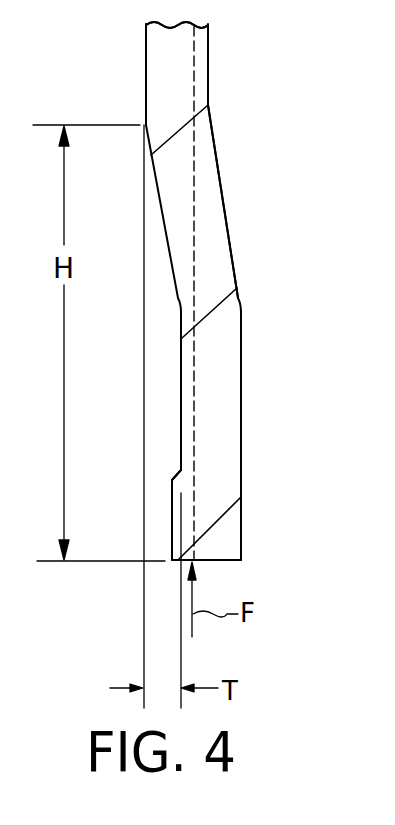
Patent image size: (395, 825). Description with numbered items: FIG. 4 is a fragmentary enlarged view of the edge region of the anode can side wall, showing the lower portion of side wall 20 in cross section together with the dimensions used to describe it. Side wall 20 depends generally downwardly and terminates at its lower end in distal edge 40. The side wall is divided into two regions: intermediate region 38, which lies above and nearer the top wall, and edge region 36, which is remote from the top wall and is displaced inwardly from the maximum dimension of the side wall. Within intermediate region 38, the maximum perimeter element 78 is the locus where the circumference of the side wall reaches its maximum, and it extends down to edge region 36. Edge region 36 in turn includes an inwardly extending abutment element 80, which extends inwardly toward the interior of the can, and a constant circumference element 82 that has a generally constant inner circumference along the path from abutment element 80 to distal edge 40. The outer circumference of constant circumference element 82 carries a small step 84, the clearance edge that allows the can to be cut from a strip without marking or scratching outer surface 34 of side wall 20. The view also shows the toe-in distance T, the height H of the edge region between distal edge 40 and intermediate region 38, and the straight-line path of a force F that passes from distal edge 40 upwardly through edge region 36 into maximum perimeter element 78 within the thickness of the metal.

The side wall 20 is at (248, 87).
The outer surface 34 is at (146, 107).
The edge region 36 is at (255, 288).
The intermediate region 38 is at (130, 76).
The distal edge 40 is at (228, 562).
The maximum perimeter element 78 is at (146, 48).
The inwardly extending abutment element 80 is at (218, 182).
The constant circumference element 82 is at (244, 447).
The small step 84 is at (178, 476).